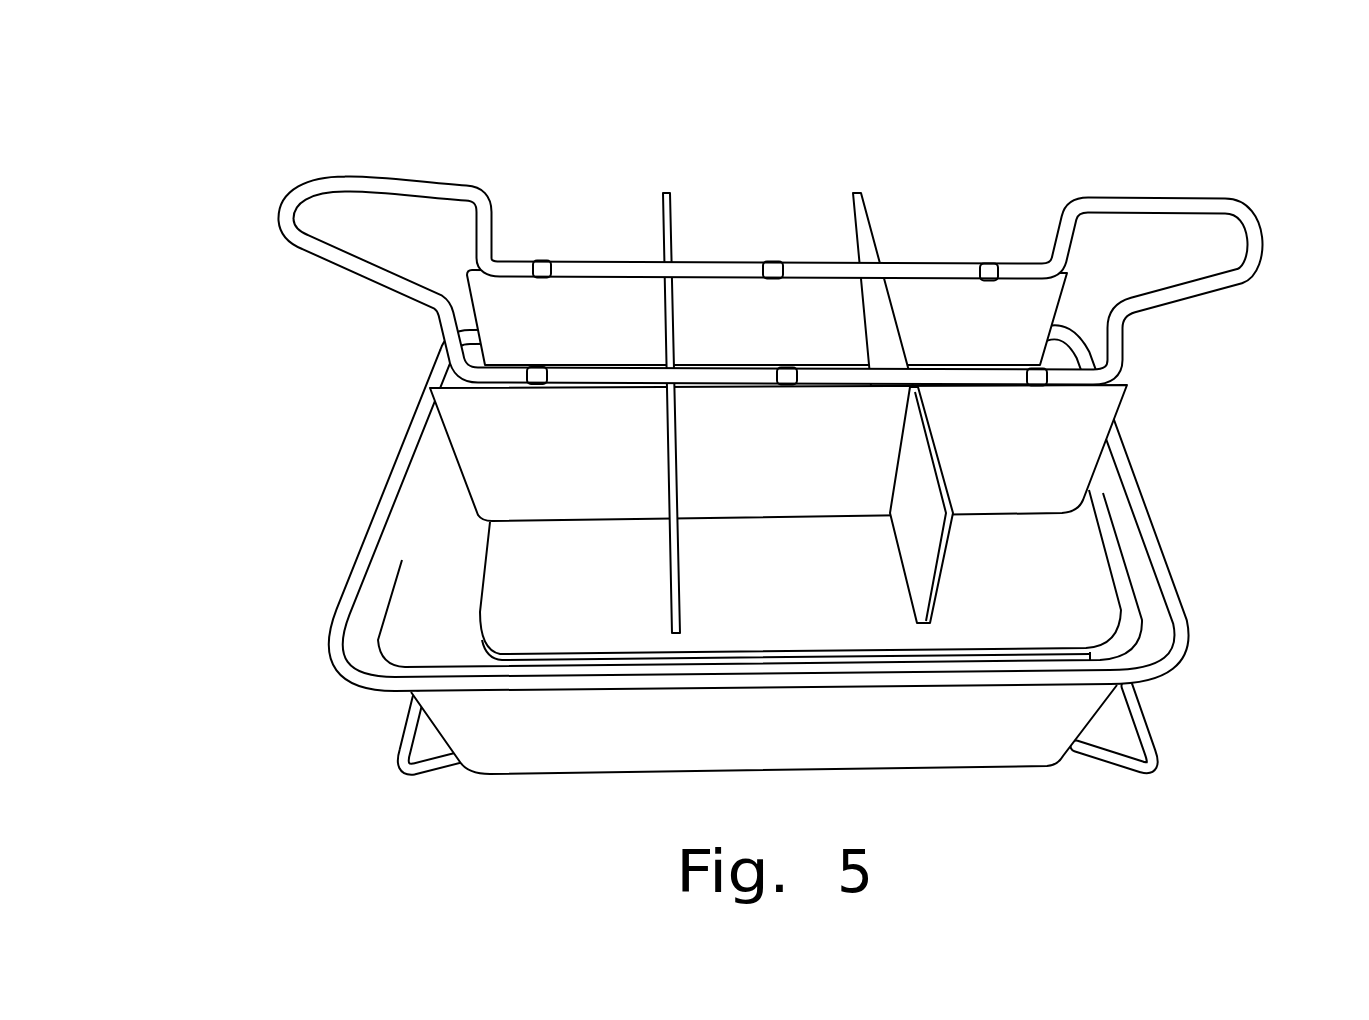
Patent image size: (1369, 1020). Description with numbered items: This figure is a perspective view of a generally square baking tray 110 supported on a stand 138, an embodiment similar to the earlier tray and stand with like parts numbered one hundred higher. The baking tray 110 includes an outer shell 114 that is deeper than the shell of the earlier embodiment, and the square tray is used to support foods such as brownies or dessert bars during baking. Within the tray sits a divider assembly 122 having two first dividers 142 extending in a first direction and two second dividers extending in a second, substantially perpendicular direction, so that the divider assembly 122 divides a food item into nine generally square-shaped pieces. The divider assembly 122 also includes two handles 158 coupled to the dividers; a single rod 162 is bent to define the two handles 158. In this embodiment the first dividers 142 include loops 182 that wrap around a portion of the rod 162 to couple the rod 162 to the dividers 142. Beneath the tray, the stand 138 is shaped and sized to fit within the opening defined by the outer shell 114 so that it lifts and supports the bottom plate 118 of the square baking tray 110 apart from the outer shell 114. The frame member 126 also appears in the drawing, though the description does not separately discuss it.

The baking tray 110 is at (210, 149).
The outer shell 114 is at (972, 750).
The bottom plate 118 is at (1073, 562).
The divider assembly 122 is at (853, 238).
The support frame 126 is at (370, 600).
The stand 138 is at (1105, 753).
The first dividers 142 is at (510, 296).
The handles 158 is at (279, 210).
The rod 162 is at (1057, 240).
The loops 182 is at (545, 269).